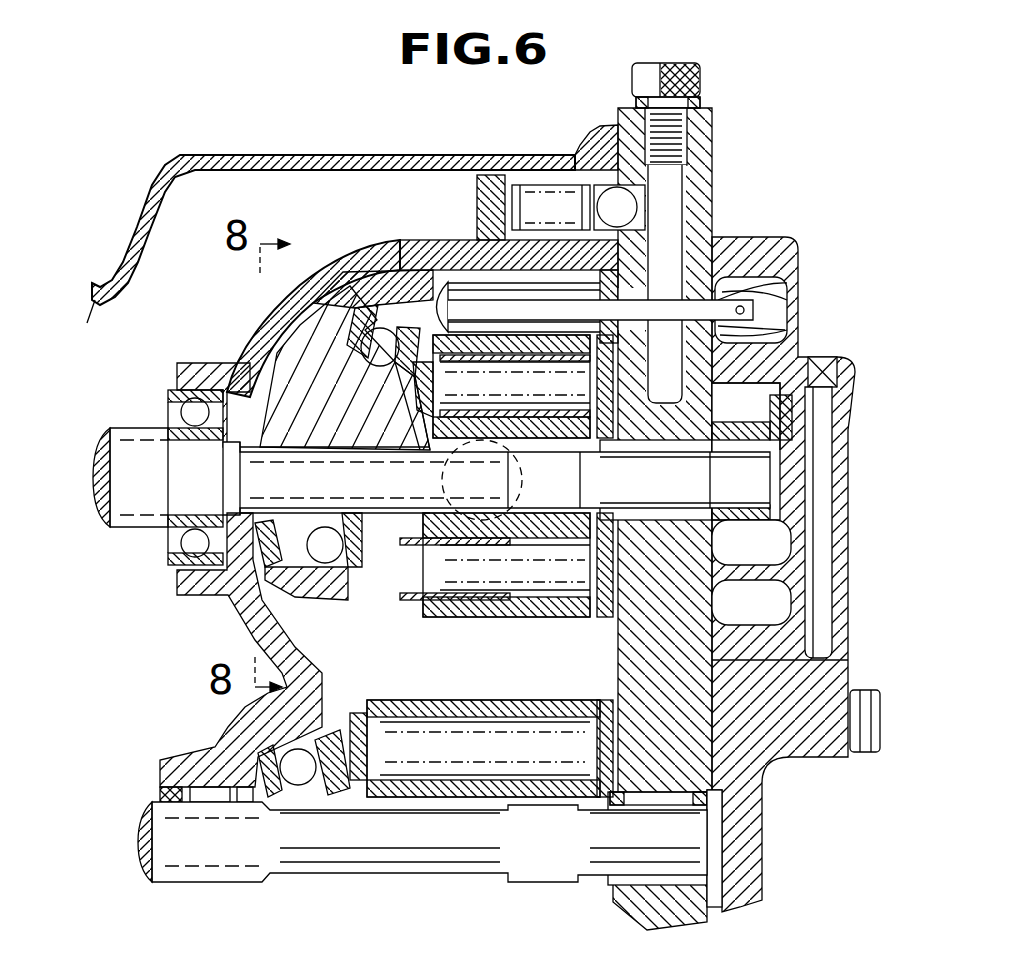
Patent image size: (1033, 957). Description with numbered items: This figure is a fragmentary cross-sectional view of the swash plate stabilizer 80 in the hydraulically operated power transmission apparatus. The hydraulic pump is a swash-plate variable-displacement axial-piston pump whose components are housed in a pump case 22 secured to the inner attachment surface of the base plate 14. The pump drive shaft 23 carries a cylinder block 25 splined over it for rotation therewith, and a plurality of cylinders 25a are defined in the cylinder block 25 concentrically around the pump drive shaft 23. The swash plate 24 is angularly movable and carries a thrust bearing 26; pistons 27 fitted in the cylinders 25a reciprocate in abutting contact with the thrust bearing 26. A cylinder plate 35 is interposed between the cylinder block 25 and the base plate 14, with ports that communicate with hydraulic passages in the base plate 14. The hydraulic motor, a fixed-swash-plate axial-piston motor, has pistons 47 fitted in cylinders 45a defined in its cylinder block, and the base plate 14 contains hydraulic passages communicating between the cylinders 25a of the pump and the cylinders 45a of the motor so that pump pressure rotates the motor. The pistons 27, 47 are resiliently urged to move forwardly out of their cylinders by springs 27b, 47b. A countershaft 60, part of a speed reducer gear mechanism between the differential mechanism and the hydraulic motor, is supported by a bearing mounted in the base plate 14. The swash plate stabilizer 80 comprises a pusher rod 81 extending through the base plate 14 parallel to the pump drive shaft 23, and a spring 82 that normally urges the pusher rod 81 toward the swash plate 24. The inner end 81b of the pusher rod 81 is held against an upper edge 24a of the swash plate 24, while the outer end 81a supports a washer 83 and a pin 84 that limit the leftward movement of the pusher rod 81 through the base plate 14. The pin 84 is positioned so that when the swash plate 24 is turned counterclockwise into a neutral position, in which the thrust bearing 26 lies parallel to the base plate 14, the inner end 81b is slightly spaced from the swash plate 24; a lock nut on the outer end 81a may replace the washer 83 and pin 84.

The base plate 14 is at (713, 140).
The pump case 22 is at (302, 262).
The pump drive shaft 23 is at (100, 428).
The swash plate 24 is at (303, 318).
The upper edge 24a is at (393, 257).
The cylinder block 25 is at (443, 600).
The cylinders 25a is at (535, 620).
The thrust bearing 26 is at (348, 600).
The pistons 27 is at (413, 452).
The springs 27b is at (562, 380).
The cylinder plate 35 is at (603, 600).
The cylinders 45a is at (557, 703).
The pistons 47 is at (350, 740).
The springs 47b is at (400, 717).
The countershaft 60 is at (350, 883).
The swash plate stabilizer 80 is at (700, 258).
The pusher rod 81 is at (760, 247).
The outer end 81a is at (790, 290).
The inner end 81b is at (428, 277).
The spring 82 is at (485, 280).
The washer 83 is at (787, 338).
The pin 84 is at (770, 316).